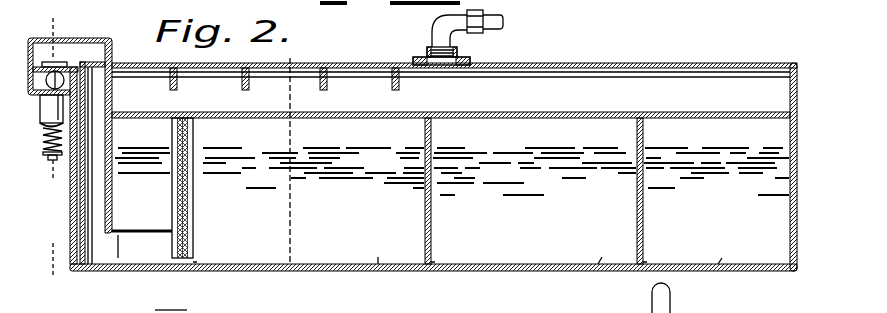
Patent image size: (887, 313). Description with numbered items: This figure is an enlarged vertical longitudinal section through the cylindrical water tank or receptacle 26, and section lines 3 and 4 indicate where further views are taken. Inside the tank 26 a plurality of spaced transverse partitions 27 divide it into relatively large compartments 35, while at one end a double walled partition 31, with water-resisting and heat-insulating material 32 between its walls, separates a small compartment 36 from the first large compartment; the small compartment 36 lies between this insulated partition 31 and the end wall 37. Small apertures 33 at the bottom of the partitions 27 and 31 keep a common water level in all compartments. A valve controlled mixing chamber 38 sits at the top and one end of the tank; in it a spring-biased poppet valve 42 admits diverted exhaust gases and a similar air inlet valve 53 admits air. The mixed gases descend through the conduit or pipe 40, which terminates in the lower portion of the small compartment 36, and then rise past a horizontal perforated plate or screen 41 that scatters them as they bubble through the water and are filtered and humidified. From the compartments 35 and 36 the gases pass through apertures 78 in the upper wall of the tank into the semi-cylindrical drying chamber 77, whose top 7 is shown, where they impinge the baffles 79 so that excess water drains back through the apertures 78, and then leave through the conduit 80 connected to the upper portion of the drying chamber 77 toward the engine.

The section line 3- 3 is at (66, 24).
The section line 4- 4 is at (302, 58).
The cover plate 7 is at (237, 63).
The water tank 26 is at (793, 277).
The transverse partitions 27 is at (432, 215).
The double walled partition 31 is at (197, 177).
The heat-insulating material 32 is at (195, 210).
The apertures 33 is at (197, 263).
The large compartments 35 is at (720, 268).
The small compartment 36 is at (125, 190).
The end wall 37 is at (67, 172).
The mixing chamber 38 is at (105, 38).
The conduit 40 is at (97, 88).
The perforated plate or screen 41 is at (143, 237).
The poppet valve 42 is at (188, 312).
The air inlet valve 53 is at (322, 312).
The drying chamber 77 is at (668, 85).
The apertures 78 is at (172, 108).
The baffle 79 is at (328, 70).
The conduit 80 is at (501, 27).